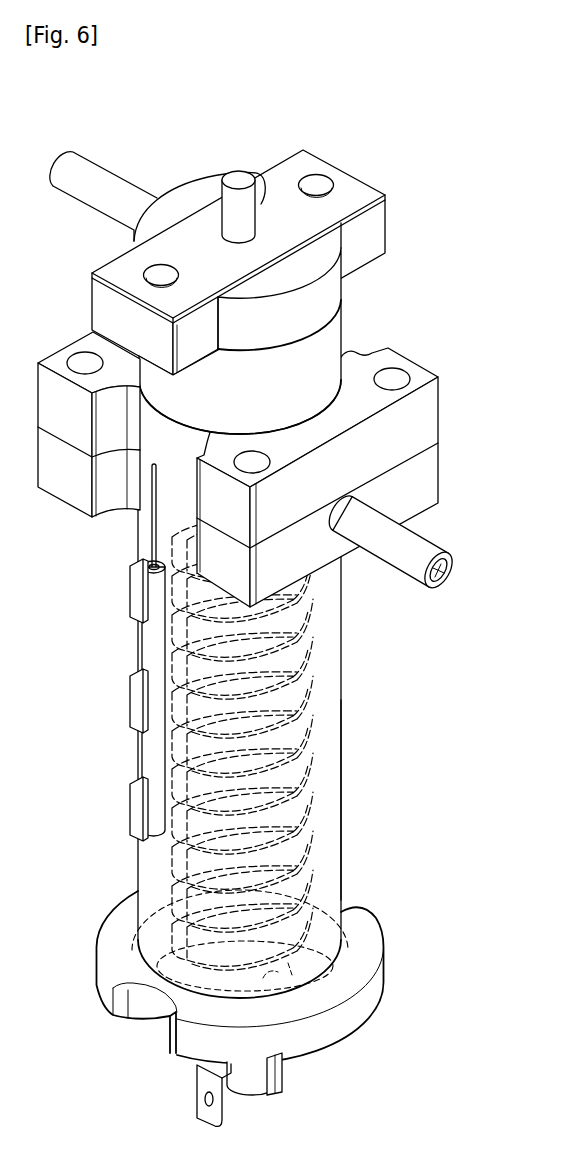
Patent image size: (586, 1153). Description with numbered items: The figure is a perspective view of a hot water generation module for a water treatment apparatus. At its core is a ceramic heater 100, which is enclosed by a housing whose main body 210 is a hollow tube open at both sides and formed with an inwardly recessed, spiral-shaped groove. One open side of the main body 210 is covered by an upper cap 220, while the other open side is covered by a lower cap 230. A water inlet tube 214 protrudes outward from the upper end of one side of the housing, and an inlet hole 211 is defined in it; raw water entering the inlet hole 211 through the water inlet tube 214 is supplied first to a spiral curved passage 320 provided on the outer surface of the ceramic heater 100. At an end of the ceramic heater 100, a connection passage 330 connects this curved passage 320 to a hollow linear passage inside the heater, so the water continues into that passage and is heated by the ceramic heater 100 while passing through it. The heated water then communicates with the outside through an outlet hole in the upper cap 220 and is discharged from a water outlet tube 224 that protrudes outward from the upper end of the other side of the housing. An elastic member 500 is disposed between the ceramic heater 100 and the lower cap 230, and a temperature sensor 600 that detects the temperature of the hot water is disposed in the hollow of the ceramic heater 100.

The ceramic heater 100 is at (343, 808).
The main body 210 is at (333, 678).
The inlet hole 211 is at (452, 577).
The water inlet tube 214 is at (395, 557).
The upper cap 220 is at (428, 420).
The water outlet tube 224 is at (60, 173).
The lower cap 230 is at (350, 1023).
The curved passage 320 is at (335, 746).
The connection passage 330 is at (331, 966).
The elastic member 500 is at (344, 932).
The temperature sensor 600 is at (258, 206).